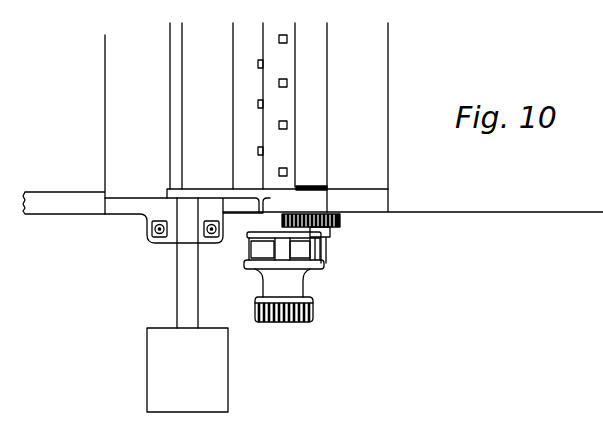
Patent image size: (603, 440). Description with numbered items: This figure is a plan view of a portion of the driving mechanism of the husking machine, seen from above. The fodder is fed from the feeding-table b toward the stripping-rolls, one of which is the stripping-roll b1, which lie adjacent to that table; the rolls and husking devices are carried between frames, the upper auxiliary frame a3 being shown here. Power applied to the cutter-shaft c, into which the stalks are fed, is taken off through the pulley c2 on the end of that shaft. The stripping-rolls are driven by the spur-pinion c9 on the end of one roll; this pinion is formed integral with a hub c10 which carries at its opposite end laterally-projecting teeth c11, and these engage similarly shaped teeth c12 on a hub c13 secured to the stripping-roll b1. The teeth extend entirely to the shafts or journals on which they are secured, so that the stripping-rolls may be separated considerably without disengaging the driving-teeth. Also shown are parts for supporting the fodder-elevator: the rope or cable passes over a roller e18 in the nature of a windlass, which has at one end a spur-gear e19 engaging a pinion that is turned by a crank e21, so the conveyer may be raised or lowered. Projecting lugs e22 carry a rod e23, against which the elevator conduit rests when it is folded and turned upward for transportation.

The upper auxiliary frame a3 is at (64, 126).
The feeding-table b is at (413, 117).
The stripping-roll b1 is at (292, 106).
The roller e18 is at (328, 137).
The spur-gear e19 is at (340, 222).
The crank e21 is at (331, 243).
The projecting lugs e22 is at (209, 192).
The rod e23 is at (183, 128).
The cutter-shaft c is at (177, 282).
The pulley c2 is at (187, 370).
The spur-pinion c9 is at (314, 314).
The hub c10 is at (305, 282).
The laterally-projecting teeth c11 is at (247, 253).
The teeth c12 is at (267, 246).
The hub c13 is at (263, 220).